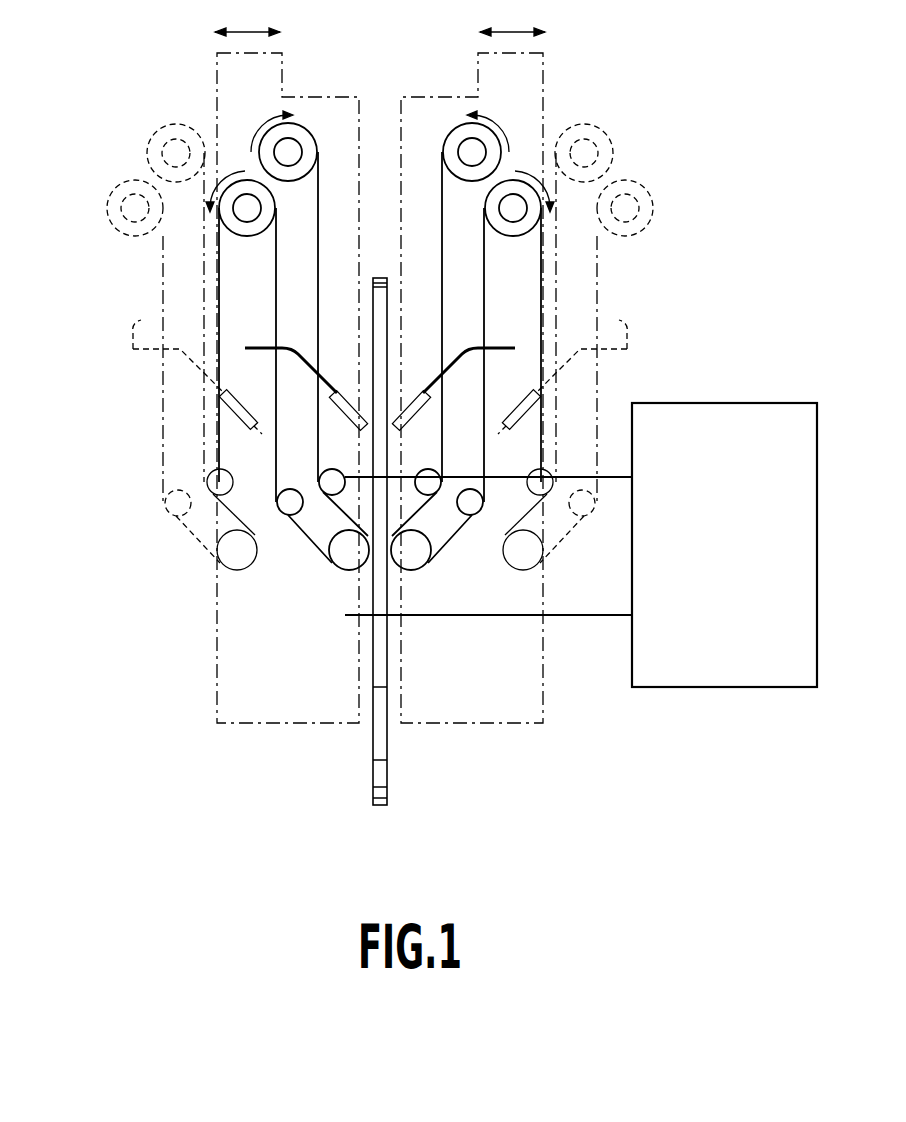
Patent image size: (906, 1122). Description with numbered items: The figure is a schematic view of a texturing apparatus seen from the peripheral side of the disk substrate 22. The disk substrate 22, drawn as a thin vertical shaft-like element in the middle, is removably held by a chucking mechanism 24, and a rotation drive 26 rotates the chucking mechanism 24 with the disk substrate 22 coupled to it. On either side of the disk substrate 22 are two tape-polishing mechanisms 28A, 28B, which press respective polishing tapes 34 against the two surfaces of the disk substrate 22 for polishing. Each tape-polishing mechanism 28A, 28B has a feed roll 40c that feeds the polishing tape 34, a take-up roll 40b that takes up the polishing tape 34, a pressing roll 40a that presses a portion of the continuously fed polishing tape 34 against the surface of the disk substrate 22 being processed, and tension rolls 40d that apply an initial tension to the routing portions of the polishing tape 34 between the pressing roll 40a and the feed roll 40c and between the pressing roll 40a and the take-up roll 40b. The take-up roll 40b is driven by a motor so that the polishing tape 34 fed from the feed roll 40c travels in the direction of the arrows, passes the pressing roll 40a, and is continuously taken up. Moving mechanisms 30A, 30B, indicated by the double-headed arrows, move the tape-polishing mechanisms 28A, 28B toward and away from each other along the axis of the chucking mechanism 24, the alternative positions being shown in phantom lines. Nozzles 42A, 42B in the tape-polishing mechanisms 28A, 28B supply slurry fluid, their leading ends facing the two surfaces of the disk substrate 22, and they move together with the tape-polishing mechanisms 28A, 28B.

The disk substrate 22 is at (381, 806).
The chucking mechanism 24 is at (580, 617).
The rotation drive 26 is at (720, 688).
The tape-polishing mechanism 28A is at (267, 97).
The tape-polishing mechanism 28B is at (493, 97).
The moving mechanism for the tape-polishing mechanism 30A is at (282, 53).
The moving mechanism for the tape-polishing mechanism 30B is at (478, 53).
The polishing tape 34 is at (485, 263).
The pressing roll 40a is at (351, 552).
The take-up roll 40b is at (247, 208).
The feed roll 40c is at (288, 152).
The tension roll 40d is at (332, 484).
The nozzle 42A is at (262, 348).
The nozzle 42B is at (498, 348).